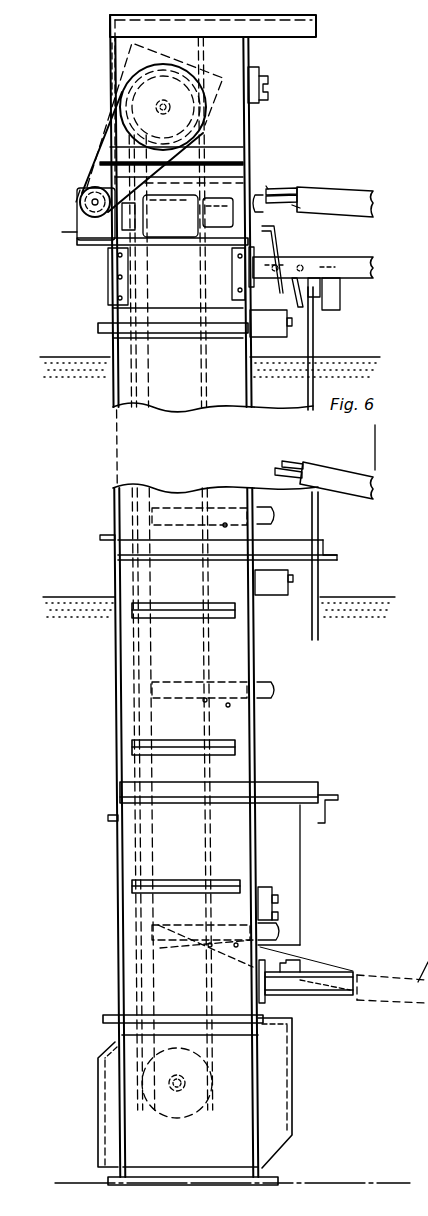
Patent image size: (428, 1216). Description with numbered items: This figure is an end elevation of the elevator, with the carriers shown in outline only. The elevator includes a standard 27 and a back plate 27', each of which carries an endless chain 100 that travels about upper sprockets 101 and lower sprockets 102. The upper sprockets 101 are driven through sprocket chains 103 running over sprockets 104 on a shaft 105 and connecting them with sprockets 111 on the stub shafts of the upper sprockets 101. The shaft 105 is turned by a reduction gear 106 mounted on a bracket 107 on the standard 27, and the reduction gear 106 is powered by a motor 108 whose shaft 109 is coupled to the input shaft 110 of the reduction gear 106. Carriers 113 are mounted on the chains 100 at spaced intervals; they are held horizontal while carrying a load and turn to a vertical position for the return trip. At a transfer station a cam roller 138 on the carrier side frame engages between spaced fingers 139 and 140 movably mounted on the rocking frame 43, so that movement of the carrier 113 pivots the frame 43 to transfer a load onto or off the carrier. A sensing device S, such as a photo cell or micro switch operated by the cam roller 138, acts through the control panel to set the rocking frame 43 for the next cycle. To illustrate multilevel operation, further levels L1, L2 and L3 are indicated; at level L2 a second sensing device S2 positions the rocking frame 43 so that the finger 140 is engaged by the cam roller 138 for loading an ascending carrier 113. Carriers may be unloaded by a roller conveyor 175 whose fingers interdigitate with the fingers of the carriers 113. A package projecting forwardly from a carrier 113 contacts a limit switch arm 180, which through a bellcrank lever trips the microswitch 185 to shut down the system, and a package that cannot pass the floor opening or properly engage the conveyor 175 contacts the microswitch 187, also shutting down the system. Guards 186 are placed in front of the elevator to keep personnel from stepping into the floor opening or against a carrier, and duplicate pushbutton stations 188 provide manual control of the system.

The sprocket 111 is at (180, 66).
The upper sprocket 101 is at (117, 80).
The sprocket chain 103 is at (112, 132).
The sprocket 104 is at (89, 187).
The shaft 105 is at (92, 202).
The reduction gear 106 is at (78, 222).
The input shaft 110 is at (62, 232).
The bracket 107 is at (94, 254).
The motor 108 is at (175, 237).
The motor shaft 109 is at (149, 216).
The guard 186 is at (292, 33).
The pushbutton station 188 is at (262, 82).
The cam roller 138 is at (268, 186).
The finger 140 is at (285, 189).
The rocking frame 43 is at (337, 196).
The carrier 113 is at (258, 207).
The finger 139 is at (292, 208).
The limit switch arm 180 is at (282, 238).
The sensing device S is at (292, 326).
The sensing device S2 is at (287, 592).
The first level L1 is at (368, 357).
The additional level L2 is at (372, 596).
The third level L3 is at (353, 972).
The standard 27 is at (287, 348).
The back plate 27' is at (147, 748).
The endless chain 100 is at (113, 398).
The microswitch 185 is at (293, 885).
The roller conveyor 175 is at (290, 962).
The microswitch 187 is at (290, 975).
The lower sprocket 102 is at (192, 1108).